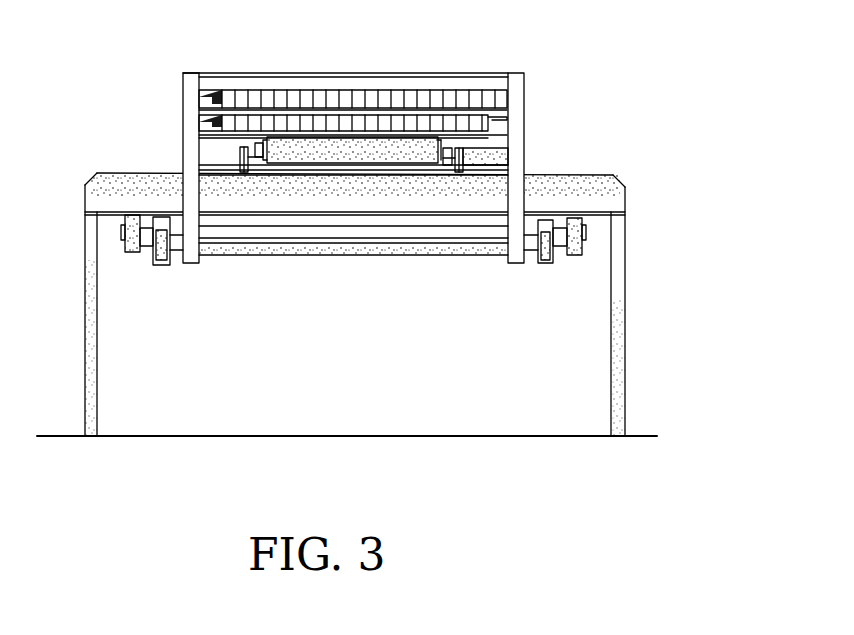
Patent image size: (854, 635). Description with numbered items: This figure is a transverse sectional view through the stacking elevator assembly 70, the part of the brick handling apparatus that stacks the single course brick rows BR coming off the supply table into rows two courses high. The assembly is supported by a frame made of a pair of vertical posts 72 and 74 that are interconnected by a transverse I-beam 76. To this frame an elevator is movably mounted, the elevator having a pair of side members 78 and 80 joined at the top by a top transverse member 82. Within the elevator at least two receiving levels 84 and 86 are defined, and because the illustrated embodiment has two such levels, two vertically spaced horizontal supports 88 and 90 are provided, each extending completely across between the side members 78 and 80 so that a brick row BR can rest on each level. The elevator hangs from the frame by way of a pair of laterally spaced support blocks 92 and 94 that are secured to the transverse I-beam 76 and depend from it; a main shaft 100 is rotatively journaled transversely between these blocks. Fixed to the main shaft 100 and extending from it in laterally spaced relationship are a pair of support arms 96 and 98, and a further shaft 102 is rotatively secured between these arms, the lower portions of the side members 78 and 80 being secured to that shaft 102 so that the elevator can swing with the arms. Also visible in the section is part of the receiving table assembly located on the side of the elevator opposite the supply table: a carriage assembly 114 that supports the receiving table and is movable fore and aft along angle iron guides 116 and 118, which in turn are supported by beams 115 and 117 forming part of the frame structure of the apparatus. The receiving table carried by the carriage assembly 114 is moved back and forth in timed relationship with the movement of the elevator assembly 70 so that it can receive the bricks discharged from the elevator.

The stacking elevator assembly 70 is at (118, 120).
The vertical post 72 is at (85, 345).
The vertical post 74 is at (625, 345).
The transverse I-beam 76 is at (107, 172).
The side member 78 is at (520, 148).
The side member 80 is at (187, 130).
The top transverse member 82 is at (352, 70).
The receiving level 84 is at (492, 105).
The receiving level 86 is at (488, 125).
The horizontal support 88 is at (222, 72).
The horizontal support 90 is at (240, 160).
The support block 92 is at (160, 250).
The support block 94 is at (575, 258).
The support arm 96 is at (162, 262).
The support arm 98 is at (545, 265).
The main shaft 100 is at (303, 235).
The shaft 102 is at (345, 252).
The carriage assembly 114 is at (437, 145).
The beam 115 is at (244, 175).
The angle iron guide 116 is at (448, 162).
The beam 117 is at (460, 160).
The angle iron guide 118 is at (260, 160).
The single course brick rows BR is at (463, 123).